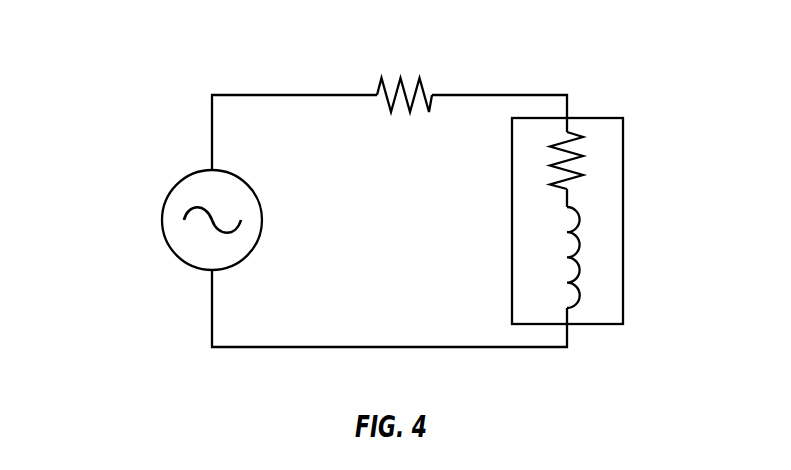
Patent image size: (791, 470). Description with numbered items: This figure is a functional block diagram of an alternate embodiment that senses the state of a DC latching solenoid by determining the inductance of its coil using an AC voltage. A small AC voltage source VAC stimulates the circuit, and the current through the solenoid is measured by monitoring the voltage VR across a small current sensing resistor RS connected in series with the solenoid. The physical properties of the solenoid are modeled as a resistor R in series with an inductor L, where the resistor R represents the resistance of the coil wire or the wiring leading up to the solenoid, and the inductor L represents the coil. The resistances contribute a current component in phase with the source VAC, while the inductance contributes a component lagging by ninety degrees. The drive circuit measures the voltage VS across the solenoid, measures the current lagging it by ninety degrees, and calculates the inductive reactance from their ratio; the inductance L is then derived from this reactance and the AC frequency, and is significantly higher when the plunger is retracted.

The AC voltage source VAC is at (178, 220).
The current sensing resistor RS is at (404, 76).
The voltage across current sensing resistor VR is at (403, 137).
The resistor R is at (579, 160).
The inductor L is at (587, 257).
The voltage across the solenoid VS is at (488, 221).